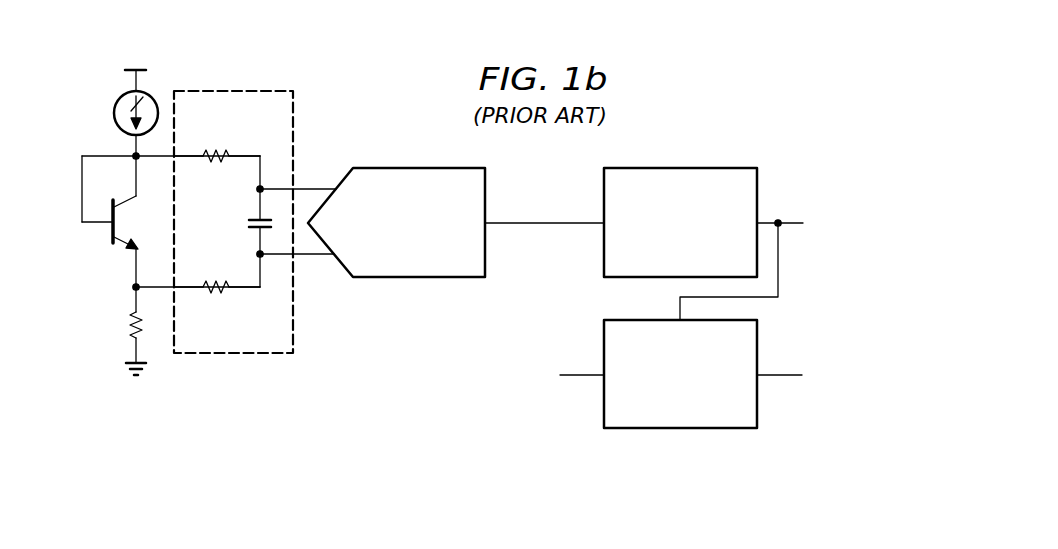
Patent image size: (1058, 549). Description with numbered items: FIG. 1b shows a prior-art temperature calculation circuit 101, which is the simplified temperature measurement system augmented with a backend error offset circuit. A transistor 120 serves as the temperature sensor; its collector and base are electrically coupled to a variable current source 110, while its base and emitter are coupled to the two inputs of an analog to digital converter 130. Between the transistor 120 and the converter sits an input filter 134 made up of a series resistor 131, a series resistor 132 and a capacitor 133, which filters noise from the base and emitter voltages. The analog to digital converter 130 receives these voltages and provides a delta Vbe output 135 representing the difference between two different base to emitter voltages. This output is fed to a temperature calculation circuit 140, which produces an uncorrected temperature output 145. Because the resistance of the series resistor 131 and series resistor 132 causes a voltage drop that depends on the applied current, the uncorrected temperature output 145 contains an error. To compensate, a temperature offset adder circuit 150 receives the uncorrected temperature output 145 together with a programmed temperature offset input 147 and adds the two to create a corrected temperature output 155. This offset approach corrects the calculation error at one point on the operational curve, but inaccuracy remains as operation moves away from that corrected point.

The temperature calculation circuit 101 is at (792, 96).
The variable current source 110 is at (114, 113).
The transistor 120 is at (112, 229).
The analog to digital converter 130 is at (408, 168).
The series resistor 131 is at (221, 152).
The series resistor 132 is at (224, 291).
The capacitor 133 is at (249, 223).
The input filter 134 is at (218, 82).
The delta Vbe output 135 is at (545, 226).
The temperature calculation circuit 140 is at (680, 168).
The uncorrected temperature output 145 is at (893, 250).
The temperature offset input 147 is at (473, 398).
The temperature offset adder circuit 150 is at (681, 430).
The corrected temperature output 155 is at (892, 402).